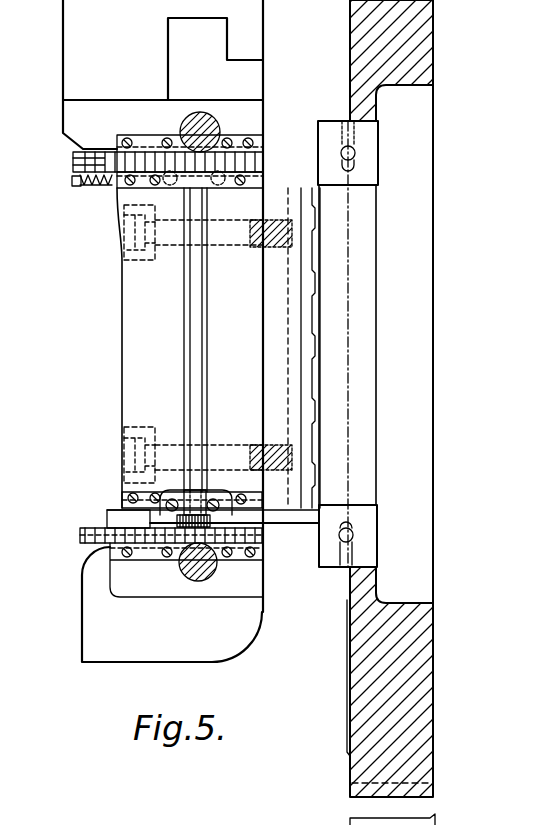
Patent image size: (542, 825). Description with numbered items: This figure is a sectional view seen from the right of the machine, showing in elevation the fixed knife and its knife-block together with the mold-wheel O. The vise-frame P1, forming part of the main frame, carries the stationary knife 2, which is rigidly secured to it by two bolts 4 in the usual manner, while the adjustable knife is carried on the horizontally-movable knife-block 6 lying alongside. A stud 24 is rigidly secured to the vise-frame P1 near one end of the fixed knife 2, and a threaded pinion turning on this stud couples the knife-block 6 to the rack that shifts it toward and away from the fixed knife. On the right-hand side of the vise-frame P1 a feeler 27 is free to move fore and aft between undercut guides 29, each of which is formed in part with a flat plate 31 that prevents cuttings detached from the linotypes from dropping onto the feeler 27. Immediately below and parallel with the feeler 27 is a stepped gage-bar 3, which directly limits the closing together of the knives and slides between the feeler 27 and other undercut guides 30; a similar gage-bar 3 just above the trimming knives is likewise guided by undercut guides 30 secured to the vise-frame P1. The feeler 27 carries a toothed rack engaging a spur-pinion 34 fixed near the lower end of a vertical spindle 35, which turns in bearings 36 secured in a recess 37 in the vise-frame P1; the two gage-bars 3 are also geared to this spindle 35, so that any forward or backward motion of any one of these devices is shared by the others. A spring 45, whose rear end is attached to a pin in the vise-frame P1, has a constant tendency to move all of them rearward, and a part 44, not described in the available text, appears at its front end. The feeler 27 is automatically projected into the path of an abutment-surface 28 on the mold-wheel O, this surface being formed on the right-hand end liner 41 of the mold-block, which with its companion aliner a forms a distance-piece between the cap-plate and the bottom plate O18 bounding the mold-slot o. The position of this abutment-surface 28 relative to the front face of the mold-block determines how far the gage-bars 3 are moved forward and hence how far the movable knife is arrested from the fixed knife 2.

The vise-frame P1 is at (163, 331).
The stationary knife 2 is at (218, 348).
The gage-bar 3 is at (246, 160).
The bolts 4 is at (120, 258).
The movable knife-block 6 is at (72, 163).
The stud 24 is at (184, 128).
The feeler 27 is at (287, 524).
The abutment-surface 28 is at (314, 524).
The undercut guides 29 is at (126, 500).
The undercut guides 30 is at (119, 141).
The flat plate 31 is at (108, 509).
The spur-pinion 34 is at (214, 548).
The vertical spindle 35 is at (208, 268).
The bearings 36 is at (212, 192).
The recess 37 is at (165, 517).
The end liner 41 is at (370, 157).
The stop block 44 is at (76, 185).
The spring 45 is at (88, 187).
The mold-wheel O is at (428, 398).
The bottom plate O18 is at (330, 128).
The aliner a is at (422, 344).
The mold-slot o is at (347, 345).